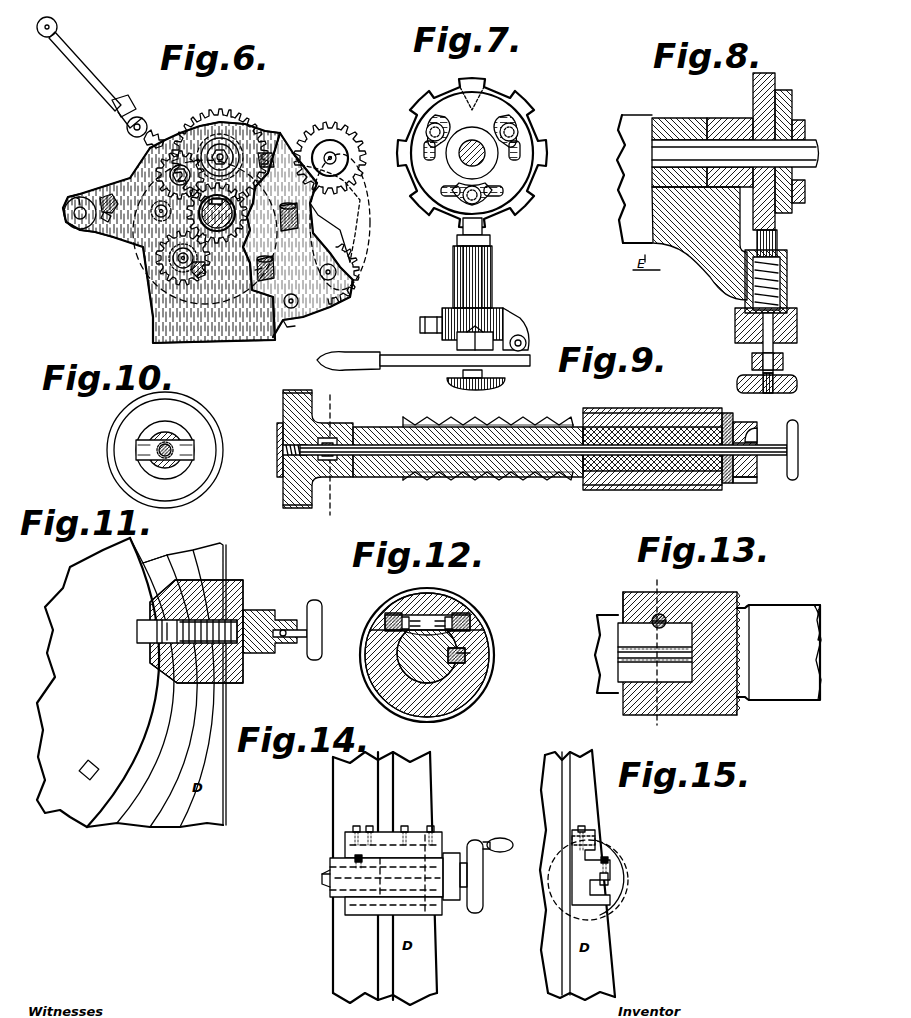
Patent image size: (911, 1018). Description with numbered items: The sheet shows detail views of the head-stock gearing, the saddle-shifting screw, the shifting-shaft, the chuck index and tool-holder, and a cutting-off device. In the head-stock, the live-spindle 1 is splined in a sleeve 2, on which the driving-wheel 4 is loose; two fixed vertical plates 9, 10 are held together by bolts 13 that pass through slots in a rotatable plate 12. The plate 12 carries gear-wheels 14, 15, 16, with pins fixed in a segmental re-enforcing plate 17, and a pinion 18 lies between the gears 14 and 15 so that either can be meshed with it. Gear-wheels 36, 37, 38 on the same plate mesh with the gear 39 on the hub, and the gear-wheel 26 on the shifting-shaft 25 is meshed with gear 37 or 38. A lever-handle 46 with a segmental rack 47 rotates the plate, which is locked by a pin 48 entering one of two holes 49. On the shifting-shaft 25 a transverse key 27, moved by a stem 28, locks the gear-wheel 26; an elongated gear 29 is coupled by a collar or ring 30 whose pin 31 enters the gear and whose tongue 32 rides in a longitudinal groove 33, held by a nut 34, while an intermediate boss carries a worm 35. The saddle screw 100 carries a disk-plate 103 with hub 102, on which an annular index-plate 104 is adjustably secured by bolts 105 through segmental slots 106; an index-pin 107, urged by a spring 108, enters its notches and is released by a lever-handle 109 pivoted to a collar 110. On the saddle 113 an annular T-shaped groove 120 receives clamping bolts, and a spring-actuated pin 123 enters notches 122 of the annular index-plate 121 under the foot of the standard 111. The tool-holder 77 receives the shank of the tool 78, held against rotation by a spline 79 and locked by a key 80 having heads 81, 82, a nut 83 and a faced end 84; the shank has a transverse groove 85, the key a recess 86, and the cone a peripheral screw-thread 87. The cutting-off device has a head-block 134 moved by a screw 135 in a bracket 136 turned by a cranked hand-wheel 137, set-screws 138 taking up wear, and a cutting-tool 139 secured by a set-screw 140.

In FIG. 6, the live-spindle 1 is at (220, 230).
In FIG. 13, the live-spindle 1 is at (779, 652).
In FIG. 6, the sleeve 2 is at (223, 232).
In FIG. 6, the driving-wheel 4 is at (218, 121).
In FIG. 6, the vertical plate 9 is at (205, 232).
In FIG. 6, the vertical plate 10 is at (260, 267).
In FIG. 9, the vertical plate 10 is at (326, 457).
In FIG. 6, the plate 12 is at (285, 160).
In FIG. 13, the plate 12 is at (656, 657).
In FIG. 6, the bolts 13 is at (103, 217).
In FIG. 6, the gear-wheel 14 is at (333, 138).
In FIG. 6, the gear-wheel 15 is at (350, 272).
In FIG. 6, the gear-wheel 16 is at (288, 321).
In FIG. 6, the segmental re-enforcing plate 17 is at (358, 248).
In FIG. 6, the pinion 18 is at (362, 200).
In FIG. 9, the shifting-shaft 25 is at (387, 427).
In FIG. 10, the shifting-shaft 25 is at (168, 466).
In FIG. 6, the gear-wheel 26 is at (143, 232).
In FIG. 9, the gear-wheel 26 is at (283, 400).
In FIG. 10, the gear-wheel 26 is at (216, 452).
In FIG. 9, the transverse key 27 is at (337, 437).
In FIG. 10, the transverse key 27 is at (177, 447).
In FIG. 9, the stem 28 is at (777, 452).
In FIG. 9, the elongated pinion or gear 29 is at (660, 409).
In FIG. 9, the collar or ring 30 is at (745, 438).
In FIG. 9, the pin 31 is at (717, 416).
In FIG. 9, the tongue 32 is at (745, 426).
In FIG. 9, the longitudinal groove 33 is at (755, 423).
In FIG. 9, the nut 34 is at (738, 479).
In FIG. 9, the worm 35 is at (440, 420).
In FIG. 6, the gear-wheel 36 is at (231, 133).
In FIG. 6, the gear-wheel 37 is at (179, 150).
In FIG. 6, the gear-wheel 38 is at (170, 250).
In FIG. 6, the gear 39 is at (222, 211).
In FIG. 6, the lever-handle 46 is at (97, 81).
In FIG. 6, the segmental rack 47 is at (154, 126).
In FIG. 6, the pin 48 is at (75, 223).
In FIG. 6, the hole 49 is at (73, 198).
In FIG. 12, the cone-head of the spindle or tool-holder 77 is at (458, 695).
In FIG. 13, the cone-head of the spindle or tool-holder 77 is at (647, 593).
In FIG. 12, the tool 78 is at (405, 663).
In FIG. 13, the tool 78 is at (605, 667).
In FIG. 12, the spline 79 is at (487, 645).
In FIG. 12, the key 80 is at (427, 620).
In FIG. 13, the key 80 is at (663, 617).
In FIG. 12, the enlarged head 81 is at (457, 613).
In FIG. 12, the exterior-faced head 82 is at (470, 617).
In FIG. 12, the nut 83 is at (397, 608).
In FIG. 12, the faced end 84 is at (385, 620).
In FIG. 12, the transverse groove 85 is at (417, 620).
In FIG. 13, the transverse groove 85 is at (659, 614).
In FIG. 12, the recess 86 is at (463, 639).
In FIG. 13, the recess 86 is at (658, 627).
In FIG. 12, the peripheral screw-thread 87 is at (363, 666).
In FIG. 13, the peripheral screw-thread 87 is at (717, 590).
In FIG. 7, the screw 100 is at (446, 214).
In FIG. 8, the screw 100 is at (735, 153).
In FIG. 7, the hub 102 is at (467, 138).
In FIG. 8, the hub 102 is at (803, 130).
In FIG. 7, the disk-plate 103 is at (495, 135).
In FIG. 8, the disk-plate 103 is at (784, 108).
In FIG. 7, the annular index-plate 104 is at (537, 112).
In FIG. 8, the annular index-plate 104 is at (753, 102).
In FIG. 7, the bolts 105 is at (426, 127).
In FIG. 7, the segmental slots 106 is at (521, 152).
In FIG. 7, the index-pin 107 is at (488, 239).
In FIG. 8, the index-pin 107 is at (777, 237).
In FIG. 8, the spring 108 is at (787, 272).
In FIG. 7, the lever-handle 109 is at (425, 360).
In FIG. 8, the lever-handle 109 is at (784, 360).
In FIG. 7, the collar 110 is at (497, 320).
In FIG. 8, the collar 110 is at (788, 320).
In FIG. 14, the standard 111 is at (385, 878).
In FIG. 15, the standard 111 is at (577, 875).
In FIG. 11, the saddle 113 is at (152, 684).
In FIG. 11, the annular T-shaped groove 120 is at (163, 742).
In FIG. 11, the annular index-plate 121 is at (83, 682).
In FIG. 11, the notches 122 is at (137, 630).
In FIG. 11, the spring-actuated pin 123 is at (250, 630).
In FIG. 14, the head-block 134 is at (353, 888).
In FIG. 15, the head-block 134 is at (588, 875).
In FIG. 14, the screw 135 is at (465, 863).
In FIG. 14, the bracket 136 is at (453, 900).
In FIG. 14, the cranked hand-wheel 137 is at (478, 883).
In FIG. 15, the cranked hand-wheel 137 is at (625, 892).
In FIG. 14, the set-screws 138 is at (367, 813).
In FIG. 15, the set-screws 138 is at (584, 828).
In FIG. 14, the cutting-tool 139 is at (327, 873).
In FIG. 15, the cutting-tool 139 is at (613, 882).
In FIG. 14, the set-screw 140 is at (355, 858).
In FIG. 15, the set-screw 140 is at (606, 857).